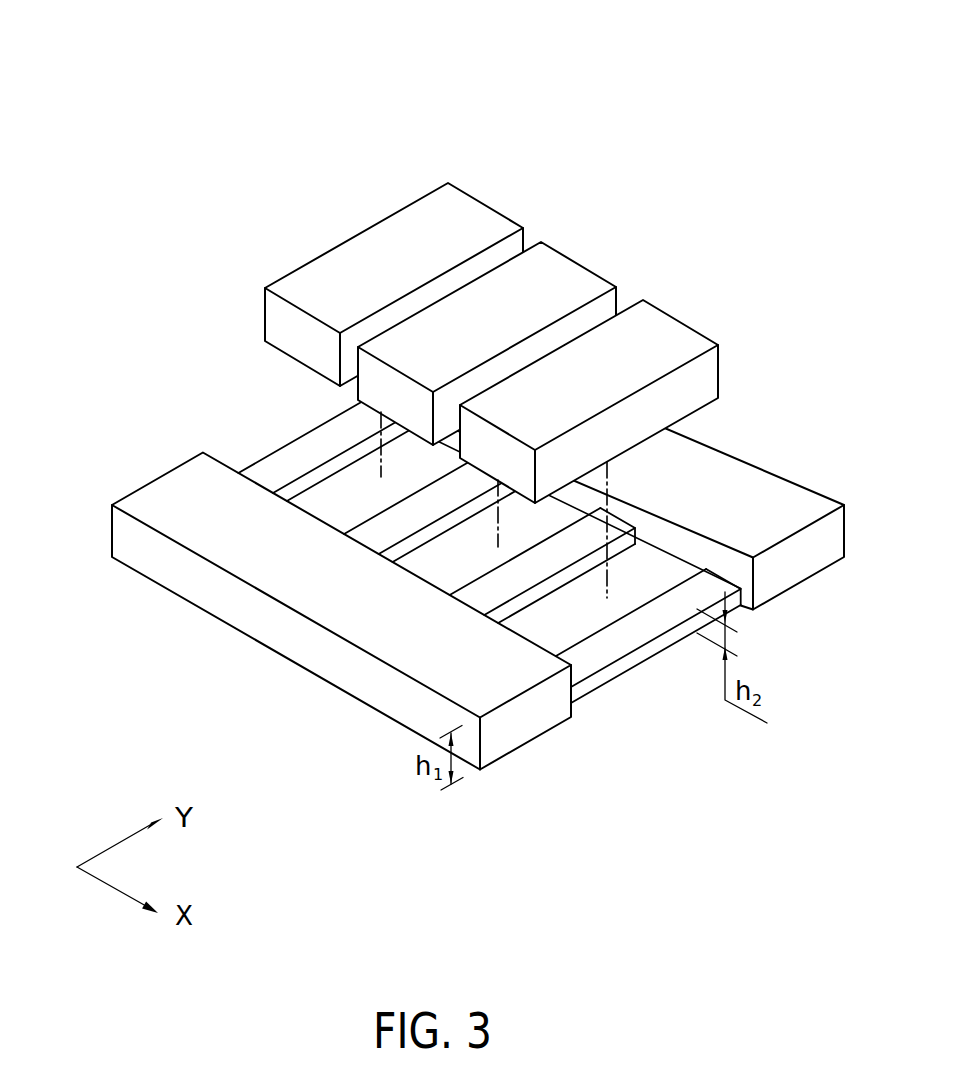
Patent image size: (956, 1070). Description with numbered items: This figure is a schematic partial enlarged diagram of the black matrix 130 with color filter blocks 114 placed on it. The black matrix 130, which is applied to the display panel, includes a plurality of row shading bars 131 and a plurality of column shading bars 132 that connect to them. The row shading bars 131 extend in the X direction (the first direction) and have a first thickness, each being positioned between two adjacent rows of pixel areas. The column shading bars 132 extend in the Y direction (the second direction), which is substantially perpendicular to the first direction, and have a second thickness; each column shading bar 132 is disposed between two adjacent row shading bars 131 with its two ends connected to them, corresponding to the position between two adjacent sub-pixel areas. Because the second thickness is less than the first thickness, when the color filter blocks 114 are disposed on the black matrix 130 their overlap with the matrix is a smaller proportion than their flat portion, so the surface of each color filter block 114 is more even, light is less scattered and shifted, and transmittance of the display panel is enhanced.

The black matrix 130 is at (191, 52).
The row shading bars 131 is at (163, 492).
The column shading bars 132 is at (625, 658).
The color filter blocks 114 is at (483, 222).